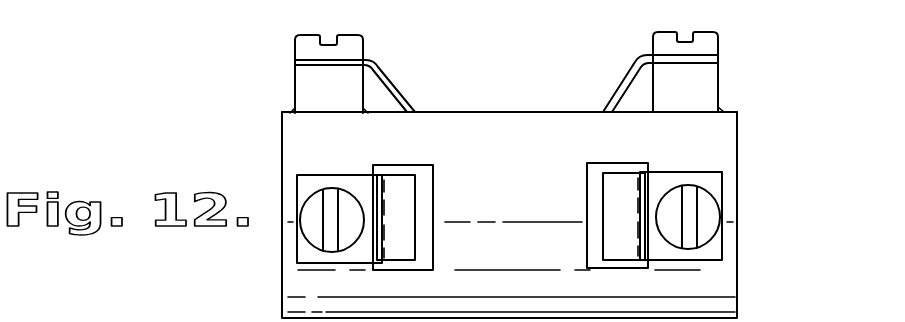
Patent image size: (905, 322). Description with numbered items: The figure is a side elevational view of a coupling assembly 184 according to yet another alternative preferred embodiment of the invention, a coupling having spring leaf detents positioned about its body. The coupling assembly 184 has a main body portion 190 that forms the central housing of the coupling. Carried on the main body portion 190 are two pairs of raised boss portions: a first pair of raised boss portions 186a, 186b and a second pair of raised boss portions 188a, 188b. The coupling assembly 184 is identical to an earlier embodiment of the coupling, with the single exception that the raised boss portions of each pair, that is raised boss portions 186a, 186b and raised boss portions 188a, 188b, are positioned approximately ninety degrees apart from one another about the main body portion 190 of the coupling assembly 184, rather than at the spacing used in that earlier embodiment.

The coupling assembly 184 is at (262, 112).
The raised boss portion 186a is at (307, 80).
The raised boss portion 186b is at (317, 177).
The raised boss portion 188a is at (707, 77).
The raised boss portion 188b is at (703, 262).
The main body portion 190 is at (502, 110).